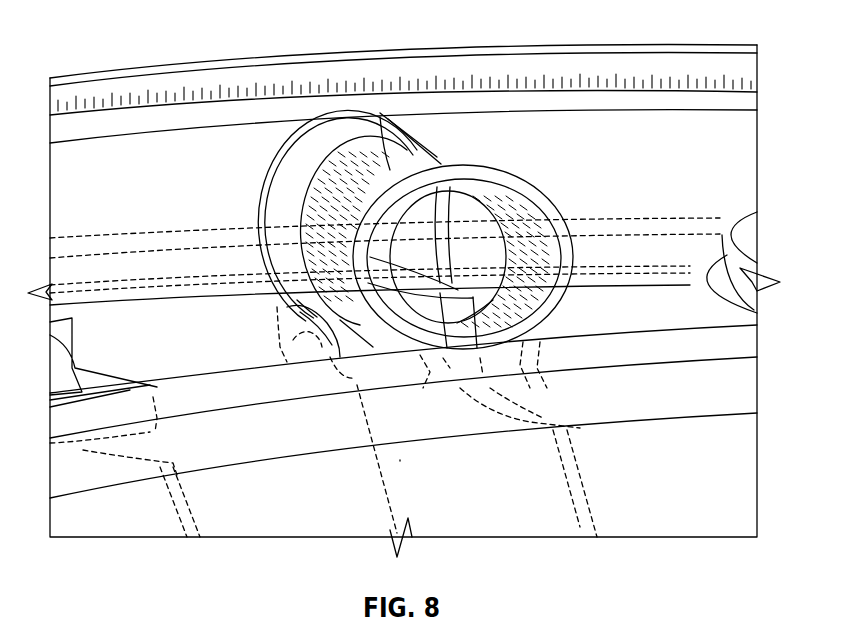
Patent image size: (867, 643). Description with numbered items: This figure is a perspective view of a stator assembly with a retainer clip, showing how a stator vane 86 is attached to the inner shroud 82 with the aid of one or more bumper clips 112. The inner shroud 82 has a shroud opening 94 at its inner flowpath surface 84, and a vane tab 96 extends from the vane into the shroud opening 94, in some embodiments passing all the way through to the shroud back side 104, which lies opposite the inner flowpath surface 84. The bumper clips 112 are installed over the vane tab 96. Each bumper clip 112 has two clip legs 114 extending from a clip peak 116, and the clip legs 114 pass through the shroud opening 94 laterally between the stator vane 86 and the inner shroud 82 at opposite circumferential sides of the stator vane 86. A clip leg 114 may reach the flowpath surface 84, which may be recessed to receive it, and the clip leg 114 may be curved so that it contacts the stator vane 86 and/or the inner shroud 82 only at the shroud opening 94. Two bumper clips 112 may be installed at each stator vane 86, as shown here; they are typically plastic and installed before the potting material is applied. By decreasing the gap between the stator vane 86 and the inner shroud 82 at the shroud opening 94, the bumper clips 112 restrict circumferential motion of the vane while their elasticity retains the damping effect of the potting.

The inner shroud 82 is at (687, 397).
The inner flowpath surface 84 is at (303, 457).
The stator vane 86 is at (513, 518).
The shroud opening 94 is at (345, 368).
The vane tab 96 is at (492, 300).
The shroud back side 104 is at (623, 310).
The bumper clip 112 is at (440, 160).
The clip leg 114 is at (320, 213).
The clip peak 116 is at (390, 170).